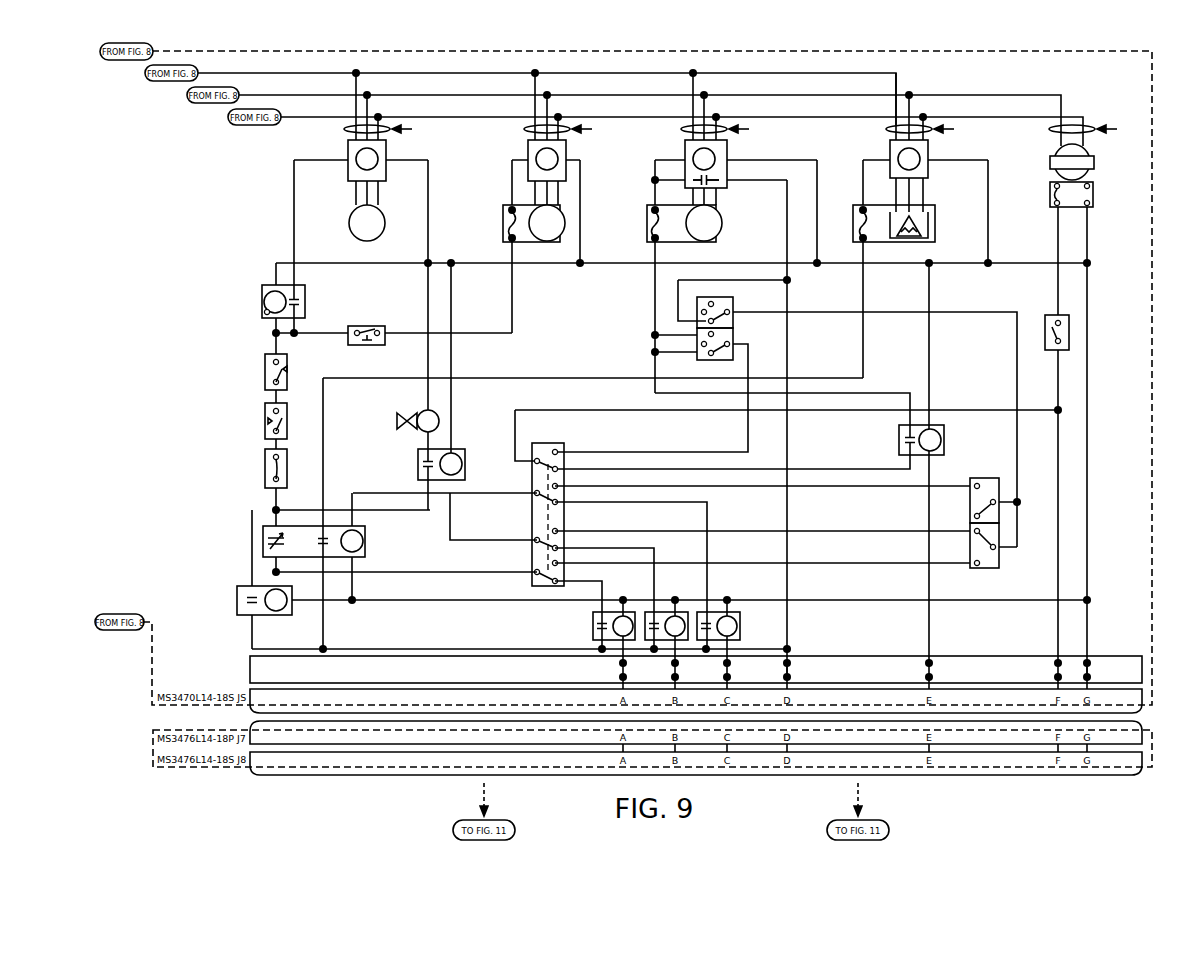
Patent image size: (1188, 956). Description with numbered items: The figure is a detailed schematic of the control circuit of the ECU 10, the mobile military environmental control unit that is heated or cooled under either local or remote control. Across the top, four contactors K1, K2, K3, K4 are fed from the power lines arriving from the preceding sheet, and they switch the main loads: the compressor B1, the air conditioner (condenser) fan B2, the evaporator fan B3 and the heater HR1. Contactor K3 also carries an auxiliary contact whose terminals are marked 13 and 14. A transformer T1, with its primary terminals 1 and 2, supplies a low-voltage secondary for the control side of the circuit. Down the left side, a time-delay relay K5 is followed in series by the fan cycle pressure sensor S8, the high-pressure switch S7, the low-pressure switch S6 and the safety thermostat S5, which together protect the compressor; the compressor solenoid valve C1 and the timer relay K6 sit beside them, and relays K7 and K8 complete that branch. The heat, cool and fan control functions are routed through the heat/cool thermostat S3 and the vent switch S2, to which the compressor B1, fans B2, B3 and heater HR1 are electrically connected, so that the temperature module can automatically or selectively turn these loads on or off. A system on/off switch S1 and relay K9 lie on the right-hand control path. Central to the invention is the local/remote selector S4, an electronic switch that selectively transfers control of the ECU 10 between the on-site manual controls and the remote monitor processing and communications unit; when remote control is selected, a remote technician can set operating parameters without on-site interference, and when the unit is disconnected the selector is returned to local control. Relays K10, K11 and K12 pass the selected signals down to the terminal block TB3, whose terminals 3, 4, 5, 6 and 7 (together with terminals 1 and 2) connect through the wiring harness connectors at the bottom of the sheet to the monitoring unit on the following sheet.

The ECU 10 is at (1152, 201).
The terminal block TB3 terminal 1 is at (628, 674).
The terminal block TB3 terminal 2 is at (680, 674).
The terminal block TB3 terminal 3 is at (732, 674).
The terminal block TB3 terminal 4 is at (792, 674).
The terminal block TB3 terminal 5 is at (934, 674).
The terminal block TB3 terminal 6 is at (1063, 674).
The terminal block TB3 terminal 7 is at (1092, 674).
The contactor K3 auxiliary contact terminal 13 is at (695, 174).
The contactor K3 auxiliary contact terminal 14 is at (715, 174).
The compressor contactor K1 is at (373, 194).
The condenser fan contactor K2 is at (572, 194).
The evaporator fan contactor K3 is at (734, 401).
The heater contactor K4 is at (928, 194).
The time delay relay K5 is at (236, 300).
The timer relay K6 is at (411, 386).
The relay K7 is at (314, 546).
The relay K8 is at (264, 600).
The relay K9 is at (921, 463).
The relay K10 is at (614, 631).
The relay K11 is at (666, 631).
The relay K12 is at (718, 631).
The system on/off switch S1 is at (1090, 487).
The vent switch S2 is at (663, 329).
The heat/cool thermostat S3 is at (976, 537).
The local/remote selector S4 is at (623, 546).
The safety thermostat S5 is at (259, 468).
The low pressure switch S6 is at (250, 421).
The high pressure switch S7 is at (240, 372).
The fan cycle pressure sensor S8 is at (372, 322).
The compressor B1 is at (367, 223).
The air conditioner fan B2 is at (534, 269).
The evaporator fan B3 is at (684, 299).
The compressor solenoid valve C1 is at (383, 356).
The heater HR1 is at (909, 291).
The transformer T1 is at (1096, 401).
The terminal block TB3 is at (696, 672).